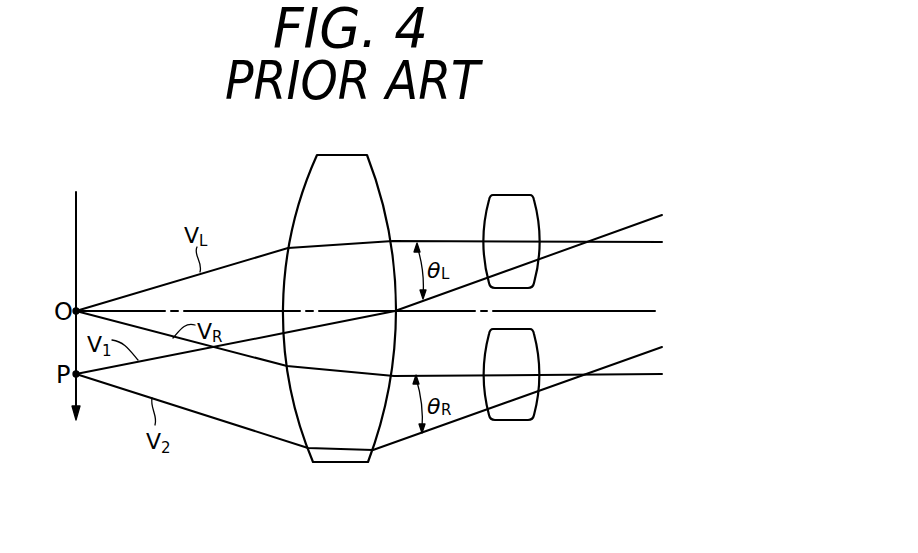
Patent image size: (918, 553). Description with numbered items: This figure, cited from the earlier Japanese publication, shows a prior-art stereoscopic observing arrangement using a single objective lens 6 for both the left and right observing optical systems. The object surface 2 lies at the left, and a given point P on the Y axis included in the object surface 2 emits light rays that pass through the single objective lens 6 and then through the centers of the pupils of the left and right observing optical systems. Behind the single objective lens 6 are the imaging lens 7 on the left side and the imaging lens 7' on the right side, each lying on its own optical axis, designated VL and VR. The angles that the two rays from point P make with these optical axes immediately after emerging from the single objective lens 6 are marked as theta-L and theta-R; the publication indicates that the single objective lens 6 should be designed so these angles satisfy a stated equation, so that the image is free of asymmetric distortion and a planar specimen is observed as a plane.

The object surface 2 is at (76, 208).
The single objective lens 6 is at (371, 172).
The imaging lens on the left side 7 is at (511, 214).
The imaging lens on the right side 7' is at (513, 401).